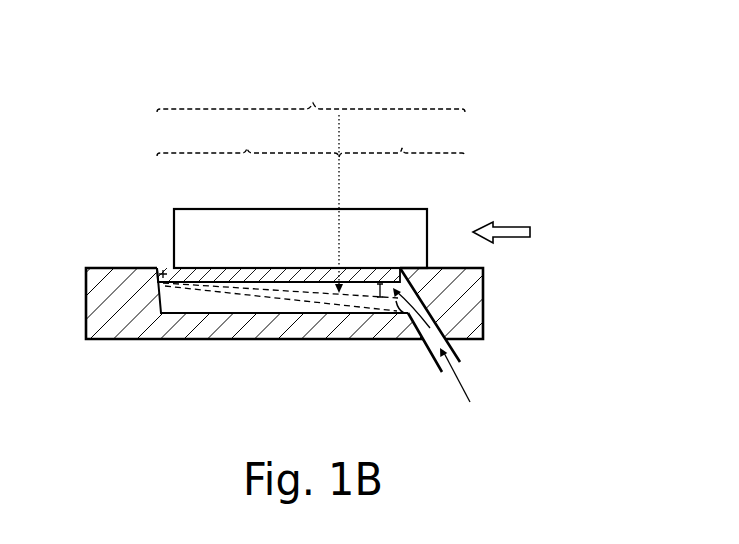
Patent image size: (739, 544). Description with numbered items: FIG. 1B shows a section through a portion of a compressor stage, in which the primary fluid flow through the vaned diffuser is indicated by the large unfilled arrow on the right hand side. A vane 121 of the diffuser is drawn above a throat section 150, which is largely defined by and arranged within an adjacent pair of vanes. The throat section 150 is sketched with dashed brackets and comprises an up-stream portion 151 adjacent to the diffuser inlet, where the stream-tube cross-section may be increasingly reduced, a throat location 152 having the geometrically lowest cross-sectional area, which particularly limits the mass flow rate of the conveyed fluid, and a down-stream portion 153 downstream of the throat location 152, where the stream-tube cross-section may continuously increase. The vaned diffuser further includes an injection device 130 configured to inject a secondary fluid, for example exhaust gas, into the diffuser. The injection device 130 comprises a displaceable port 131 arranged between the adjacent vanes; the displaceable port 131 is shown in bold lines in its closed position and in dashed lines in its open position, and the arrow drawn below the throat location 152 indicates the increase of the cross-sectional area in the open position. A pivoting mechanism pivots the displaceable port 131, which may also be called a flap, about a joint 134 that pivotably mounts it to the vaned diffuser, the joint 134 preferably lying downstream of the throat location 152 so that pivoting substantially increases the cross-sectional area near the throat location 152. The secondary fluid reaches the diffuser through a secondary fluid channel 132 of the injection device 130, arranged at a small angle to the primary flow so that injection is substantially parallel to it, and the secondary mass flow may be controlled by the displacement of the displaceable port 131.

The vane 121 is at (422, 252).
The injection device 130 is at (423, 342).
The displaceable port 131 is at (163, 271).
The secondary fluid channel 132 is at (455, 366).
The joint 134 is at (157, 277).
The throat section 150 is at (313, 102).
The up-stream portion 151 is at (402, 141).
The throat location 152 is at (343, 231).
The down-stream portion 153 is at (248, 141).